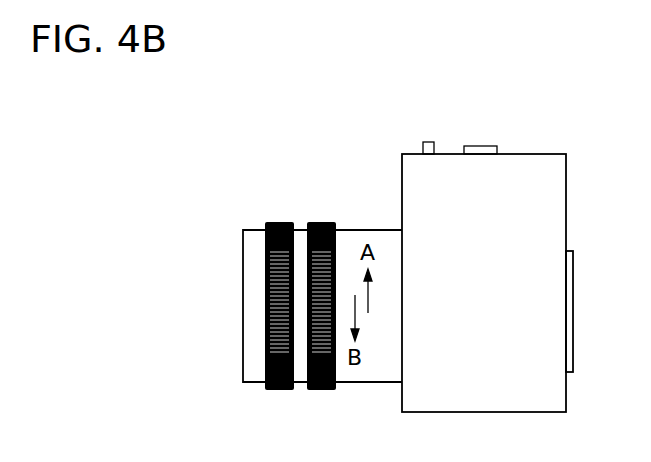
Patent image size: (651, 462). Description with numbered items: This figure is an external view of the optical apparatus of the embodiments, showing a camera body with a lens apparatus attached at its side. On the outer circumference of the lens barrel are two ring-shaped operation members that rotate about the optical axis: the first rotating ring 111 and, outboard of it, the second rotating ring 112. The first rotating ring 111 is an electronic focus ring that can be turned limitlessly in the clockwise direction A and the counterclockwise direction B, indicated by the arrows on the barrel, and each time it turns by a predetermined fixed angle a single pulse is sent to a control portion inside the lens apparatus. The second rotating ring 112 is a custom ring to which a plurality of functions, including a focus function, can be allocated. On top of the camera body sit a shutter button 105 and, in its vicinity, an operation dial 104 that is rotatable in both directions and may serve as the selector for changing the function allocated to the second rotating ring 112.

The operation dial 104 is at (428, 142).
The shutter button 105 is at (485, 146).
The first rotating ring 111 is at (323, 222).
The second rotating ring 112 is at (279, 222).